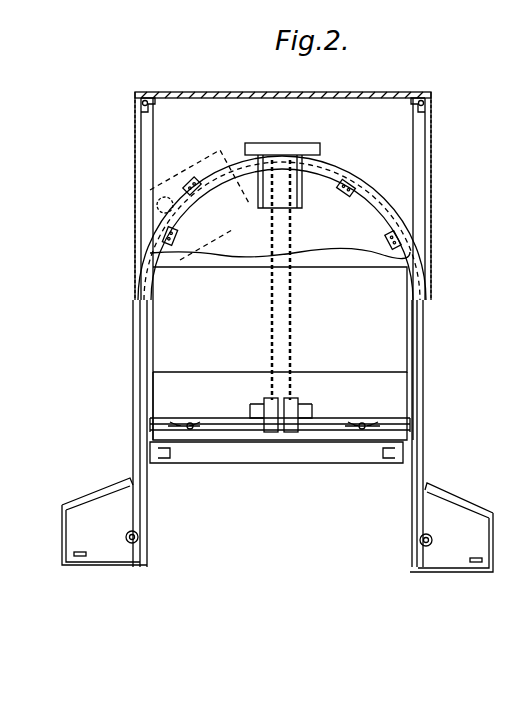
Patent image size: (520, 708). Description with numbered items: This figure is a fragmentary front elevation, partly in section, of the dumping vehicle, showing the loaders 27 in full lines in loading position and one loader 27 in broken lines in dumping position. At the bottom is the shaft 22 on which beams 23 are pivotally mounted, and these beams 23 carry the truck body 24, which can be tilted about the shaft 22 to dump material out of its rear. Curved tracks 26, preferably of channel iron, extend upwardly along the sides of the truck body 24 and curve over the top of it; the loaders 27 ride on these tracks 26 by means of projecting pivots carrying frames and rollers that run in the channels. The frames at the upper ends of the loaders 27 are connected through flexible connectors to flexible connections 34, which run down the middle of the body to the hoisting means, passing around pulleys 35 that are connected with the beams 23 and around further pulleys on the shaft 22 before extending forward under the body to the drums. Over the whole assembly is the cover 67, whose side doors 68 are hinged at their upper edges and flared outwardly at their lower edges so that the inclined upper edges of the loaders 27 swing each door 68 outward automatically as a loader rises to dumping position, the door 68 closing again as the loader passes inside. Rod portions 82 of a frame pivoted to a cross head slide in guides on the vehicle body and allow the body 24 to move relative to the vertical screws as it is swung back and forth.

The cover 67 is at (302, 92).
The side door 68 is at (133, 180).
The curved track 26 is at (220, 190).
The loader 27 is at (184, 168).
The truck body 24 is at (280, 344).
The flexible connection 34 is at (290, 318).
The pulley 35 is at (283, 432).
The shaft 22 is at (214, 430).
The beam 23 is at (162, 420).
The rod portion 82 is at (362, 430).